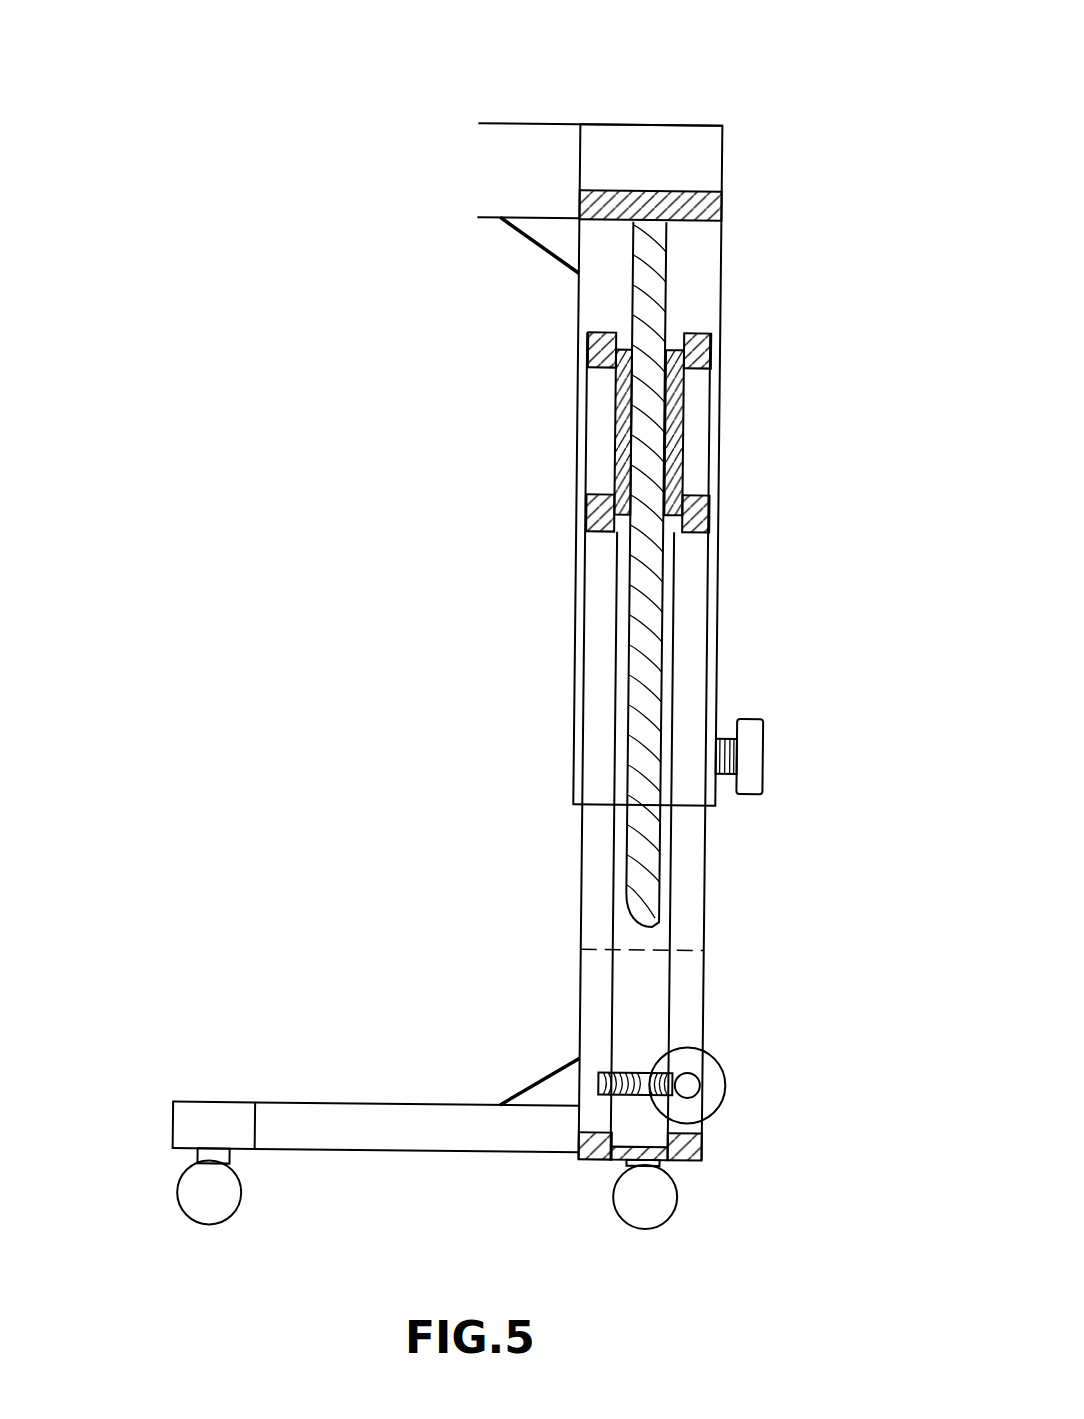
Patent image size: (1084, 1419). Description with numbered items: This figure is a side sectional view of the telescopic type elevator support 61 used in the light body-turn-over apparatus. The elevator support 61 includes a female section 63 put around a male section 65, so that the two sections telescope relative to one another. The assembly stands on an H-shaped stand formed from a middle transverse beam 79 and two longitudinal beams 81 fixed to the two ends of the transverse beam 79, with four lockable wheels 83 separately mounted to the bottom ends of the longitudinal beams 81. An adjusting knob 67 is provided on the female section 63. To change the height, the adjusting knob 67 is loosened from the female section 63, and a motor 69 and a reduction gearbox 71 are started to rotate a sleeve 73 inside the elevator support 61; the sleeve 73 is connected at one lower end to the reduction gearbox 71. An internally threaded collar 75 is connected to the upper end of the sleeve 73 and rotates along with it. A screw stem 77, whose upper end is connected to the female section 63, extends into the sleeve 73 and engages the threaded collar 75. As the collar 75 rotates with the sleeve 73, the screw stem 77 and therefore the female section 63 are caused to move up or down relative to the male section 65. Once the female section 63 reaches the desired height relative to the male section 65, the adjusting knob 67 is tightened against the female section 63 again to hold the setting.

The telescopic type elevator support 61 is at (748, 100).
The female section 63 is at (722, 294).
The male section 65 is at (705, 897).
The adjusting knob 67 is at (753, 757).
The motor 69 is at (723, 1083).
The reduction gearbox 71 is at (600, 1083).
The sleeve 73 is at (613, 925).
The internally threaded collar 75 is at (615, 417).
The screw stem 77 is at (637, 863).
The middle transverse beam 79 is at (476, 1137).
The longitudinal beam 81 is at (205, 1118).
The lockable wheel 83 is at (643, 1212).